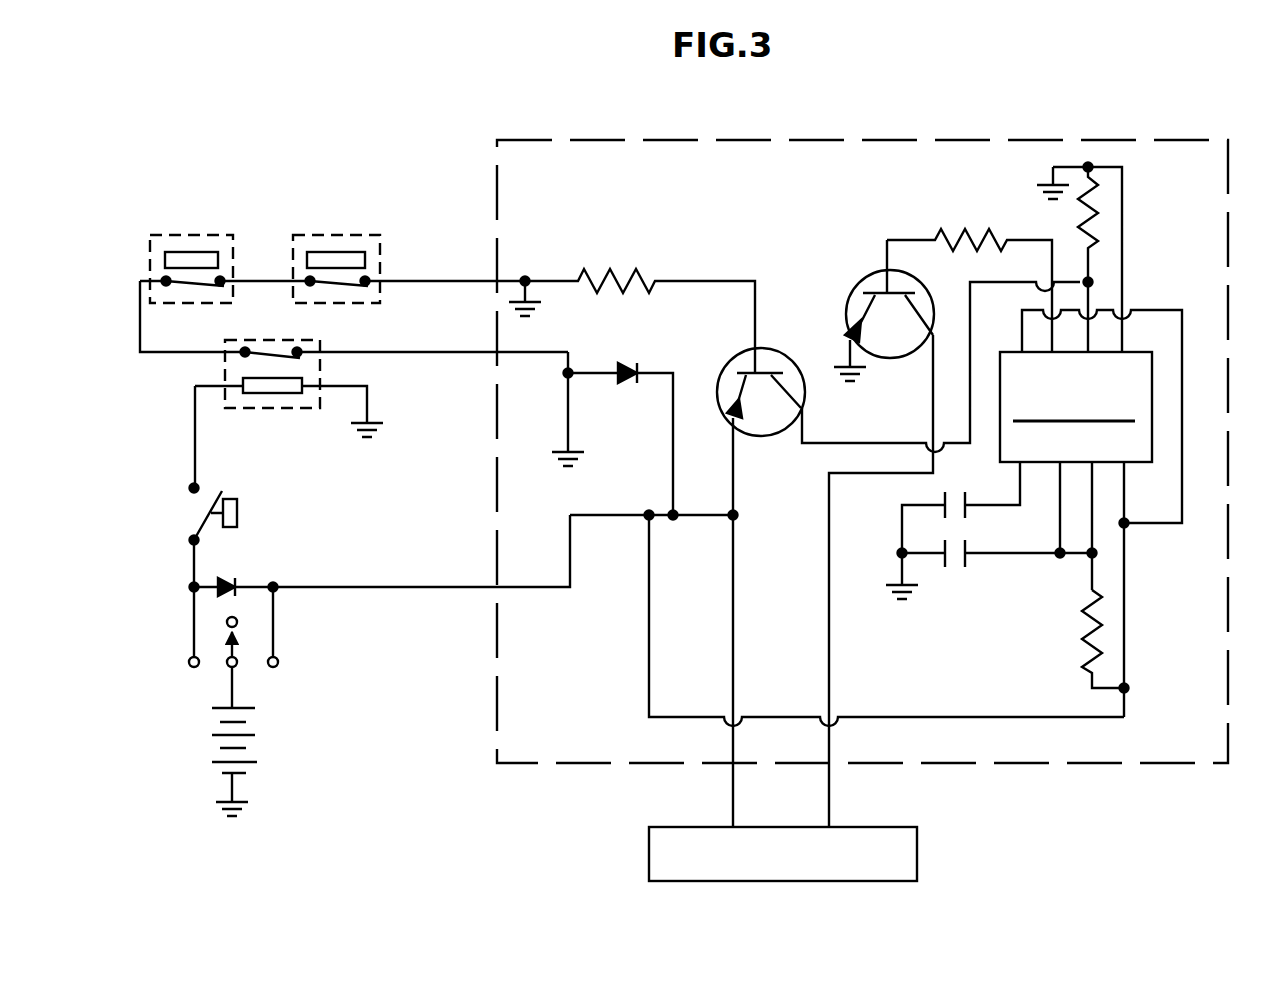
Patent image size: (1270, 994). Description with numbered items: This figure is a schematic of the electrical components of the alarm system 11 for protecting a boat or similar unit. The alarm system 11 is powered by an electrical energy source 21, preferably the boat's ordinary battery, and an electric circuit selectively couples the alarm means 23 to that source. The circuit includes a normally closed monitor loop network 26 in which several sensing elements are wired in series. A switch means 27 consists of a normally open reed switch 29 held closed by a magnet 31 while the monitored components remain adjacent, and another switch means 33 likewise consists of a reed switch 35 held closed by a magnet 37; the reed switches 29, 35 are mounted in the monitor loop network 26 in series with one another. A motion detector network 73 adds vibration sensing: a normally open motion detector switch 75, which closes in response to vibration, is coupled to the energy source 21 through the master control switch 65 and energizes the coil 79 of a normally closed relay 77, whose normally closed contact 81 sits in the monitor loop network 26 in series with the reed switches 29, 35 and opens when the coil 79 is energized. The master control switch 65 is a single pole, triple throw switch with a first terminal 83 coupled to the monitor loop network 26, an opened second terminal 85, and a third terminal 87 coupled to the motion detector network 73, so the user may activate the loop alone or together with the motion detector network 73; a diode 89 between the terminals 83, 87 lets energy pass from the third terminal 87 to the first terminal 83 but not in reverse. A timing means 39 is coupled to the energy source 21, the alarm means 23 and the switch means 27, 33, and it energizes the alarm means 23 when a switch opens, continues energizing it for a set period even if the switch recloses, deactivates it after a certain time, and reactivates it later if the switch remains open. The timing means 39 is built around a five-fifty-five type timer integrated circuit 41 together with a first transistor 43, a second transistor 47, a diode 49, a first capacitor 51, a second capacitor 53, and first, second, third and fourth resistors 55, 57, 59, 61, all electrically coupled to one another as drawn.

The alarm system 11 is at (133, 82).
The electrical energy source 21 is at (260, 728).
The alarm means 23 is at (884, 835).
The normally closed monitor loop network 26 is at (138, 326).
The switch means 27 is at (353, 257).
The reed switch 29 is at (344, 284).
The magnet 31 is at (330, 262).
The switch means 33 is at (165, 265).
The reed switch 35 is at (186, 284).
The magnet 37 is at (197, 262).
The timing means 39 is at (963, 138).
The RC 555 integrated circuit 41 is at (1143, 433).
The first transistor 43 is at (776, 362).
The second transistor 47 is at (872, 283).
The diode 49 is at (628, 392).
The first capacitor 51 is at (934, 492).
The second capacitor 53 is at (956, 568).
The first resistor 55 is at (1075, 225).
The second resistor 57 is at (968, 221).
The third resistor 59 is at (627, 258).
The fourth resistor 61 is at (1081, 639).
The master control switch 65 is at (234, 649).
The motion detector network 73 is at (181, 465).
The motion detector switch 75 is at (209, 508).
The relay 77 is at (264, 393).
The coil 79 is at (258, 393).
The normally closed contact 81 is at (262, 359).
The first terminal 83 is at (278, 658).
The second terminal 85 is at (238, 627).
The third terminal 87 is at (188, 659).
The diode 89 is at (226, 572).